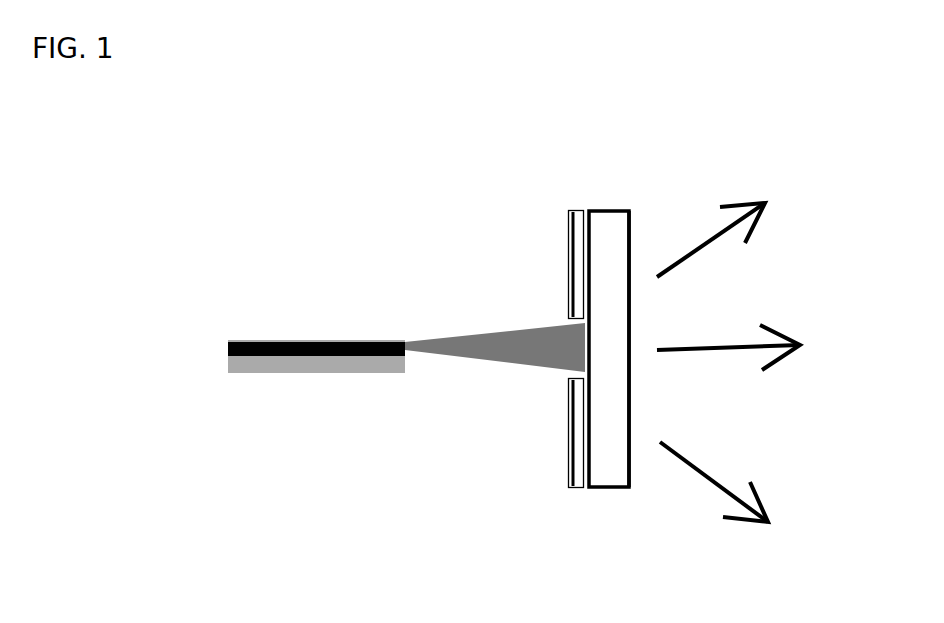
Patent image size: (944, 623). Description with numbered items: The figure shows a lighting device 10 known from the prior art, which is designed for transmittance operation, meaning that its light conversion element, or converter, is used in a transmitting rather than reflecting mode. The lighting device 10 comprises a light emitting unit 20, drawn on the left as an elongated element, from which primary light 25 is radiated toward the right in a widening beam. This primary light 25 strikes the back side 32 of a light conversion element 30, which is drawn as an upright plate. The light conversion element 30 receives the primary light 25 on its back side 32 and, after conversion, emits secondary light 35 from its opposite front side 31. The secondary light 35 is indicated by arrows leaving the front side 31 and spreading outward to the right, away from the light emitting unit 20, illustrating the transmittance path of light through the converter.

The lighting device 10 is at (405, 255).
The light emitting unit 20 is at (305, 362).
The primary light 25 is at (500, 362).
The light conversion element 30 is at (612, 476).
The front side 31 is at (630, 208).
The back side 32 is at (565, 318).
The secondary light 35 is at (765, 182).